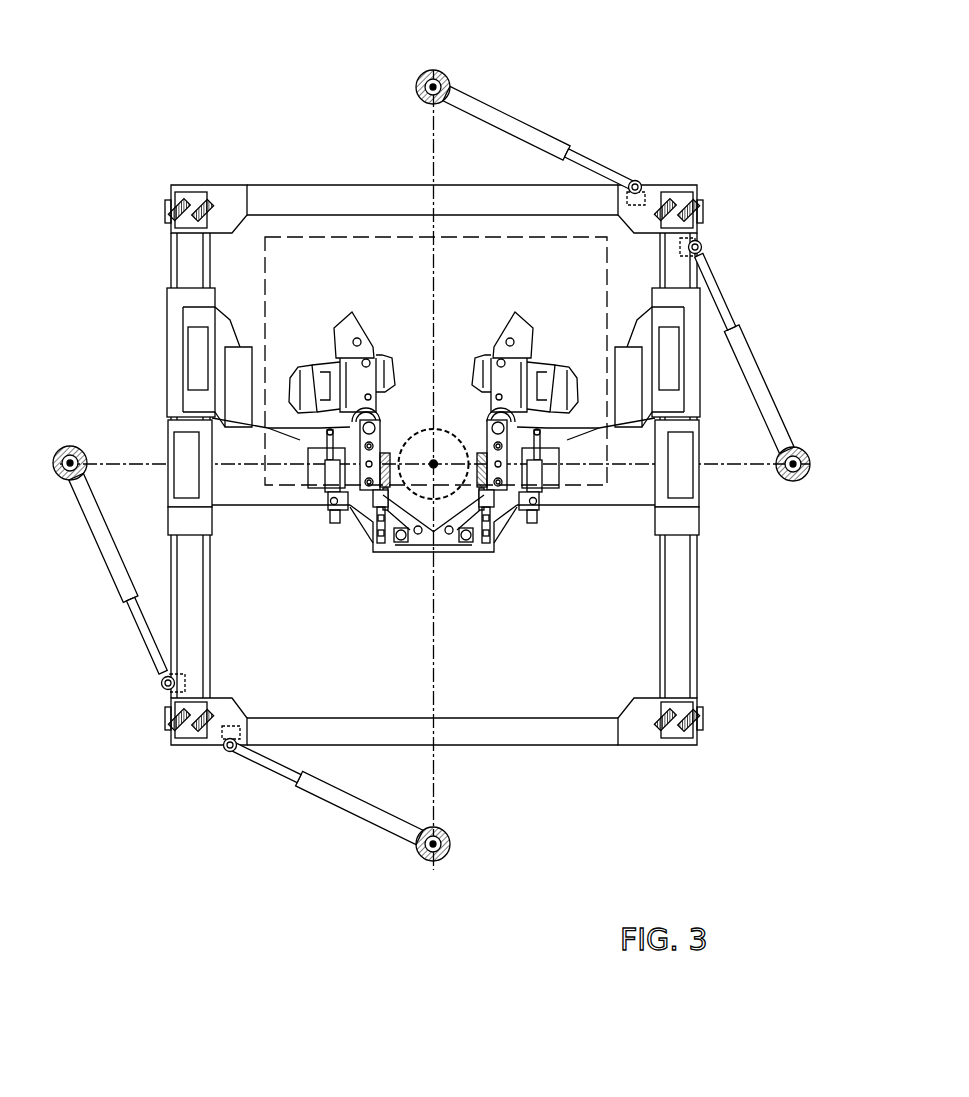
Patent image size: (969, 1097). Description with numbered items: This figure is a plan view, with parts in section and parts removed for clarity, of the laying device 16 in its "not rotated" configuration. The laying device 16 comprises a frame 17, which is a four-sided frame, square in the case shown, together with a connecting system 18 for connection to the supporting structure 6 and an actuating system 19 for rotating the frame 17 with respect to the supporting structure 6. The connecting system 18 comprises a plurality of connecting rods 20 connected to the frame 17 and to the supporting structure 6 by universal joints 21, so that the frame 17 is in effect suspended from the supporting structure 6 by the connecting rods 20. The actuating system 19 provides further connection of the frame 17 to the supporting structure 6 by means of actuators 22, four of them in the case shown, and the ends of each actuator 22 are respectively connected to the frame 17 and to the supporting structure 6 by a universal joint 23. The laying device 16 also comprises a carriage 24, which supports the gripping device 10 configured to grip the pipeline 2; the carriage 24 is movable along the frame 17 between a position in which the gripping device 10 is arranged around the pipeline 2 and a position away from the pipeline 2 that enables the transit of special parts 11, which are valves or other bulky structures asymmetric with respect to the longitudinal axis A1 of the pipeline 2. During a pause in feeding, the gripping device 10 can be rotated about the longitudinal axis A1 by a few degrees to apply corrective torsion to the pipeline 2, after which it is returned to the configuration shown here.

The pipeline 2 is at (448, 430).
The supporting structure 6 is at (423, 95).
The gripping device 10 is at (568, 528).
The special parts 11 is at (365, 272).
The laying device 16 is at (720, 117).
The frame 17 is at (680, 583).
The connecting system 18 is at (772, 161).
The actuating system 19 is at (614, 106).
The connecting rods 20 is at (212, 215).
The universal joints 21 is at (206, 196).
The actuators 22 is at (483, 118).
The universal joint 23 is at (434, 68).
The carriage 24 is at (275, 495).
The longitudinal axis A1 is at (433, 462).